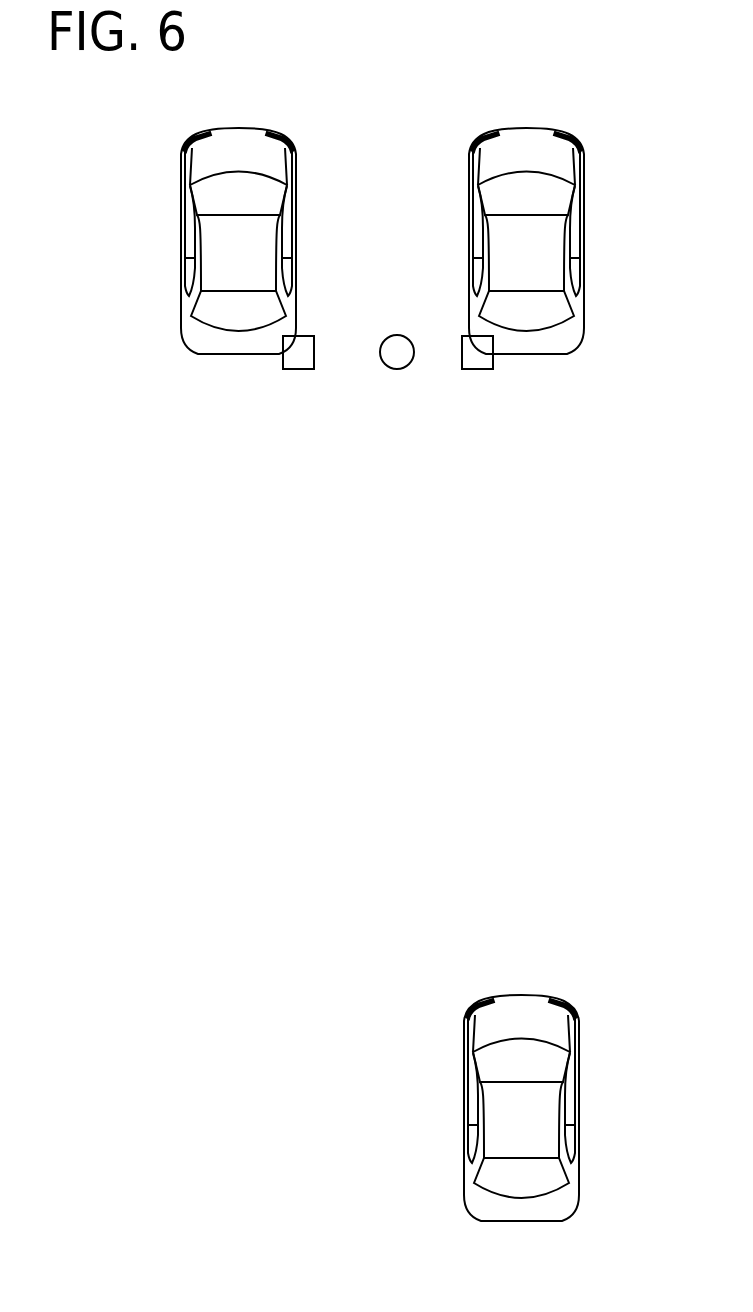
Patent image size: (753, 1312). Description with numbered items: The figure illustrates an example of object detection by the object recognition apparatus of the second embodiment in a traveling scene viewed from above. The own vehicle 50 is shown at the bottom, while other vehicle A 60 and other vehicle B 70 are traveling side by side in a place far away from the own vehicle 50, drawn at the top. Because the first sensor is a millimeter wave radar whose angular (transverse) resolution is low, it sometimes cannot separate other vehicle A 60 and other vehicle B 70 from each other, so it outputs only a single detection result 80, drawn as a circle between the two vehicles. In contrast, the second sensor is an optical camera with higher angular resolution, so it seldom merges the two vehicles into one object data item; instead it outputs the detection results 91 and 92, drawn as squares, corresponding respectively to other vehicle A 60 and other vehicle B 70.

The own vehicle 50 is at (580, 1041).
The other vehicle A 60 is at (298, 181).
The other vehicle B 70 is at (586, 181).
The detection result 80 is at (399, 369).
The detection result 91 is at (292, 370).
The detection result 92 is at (478, 370).